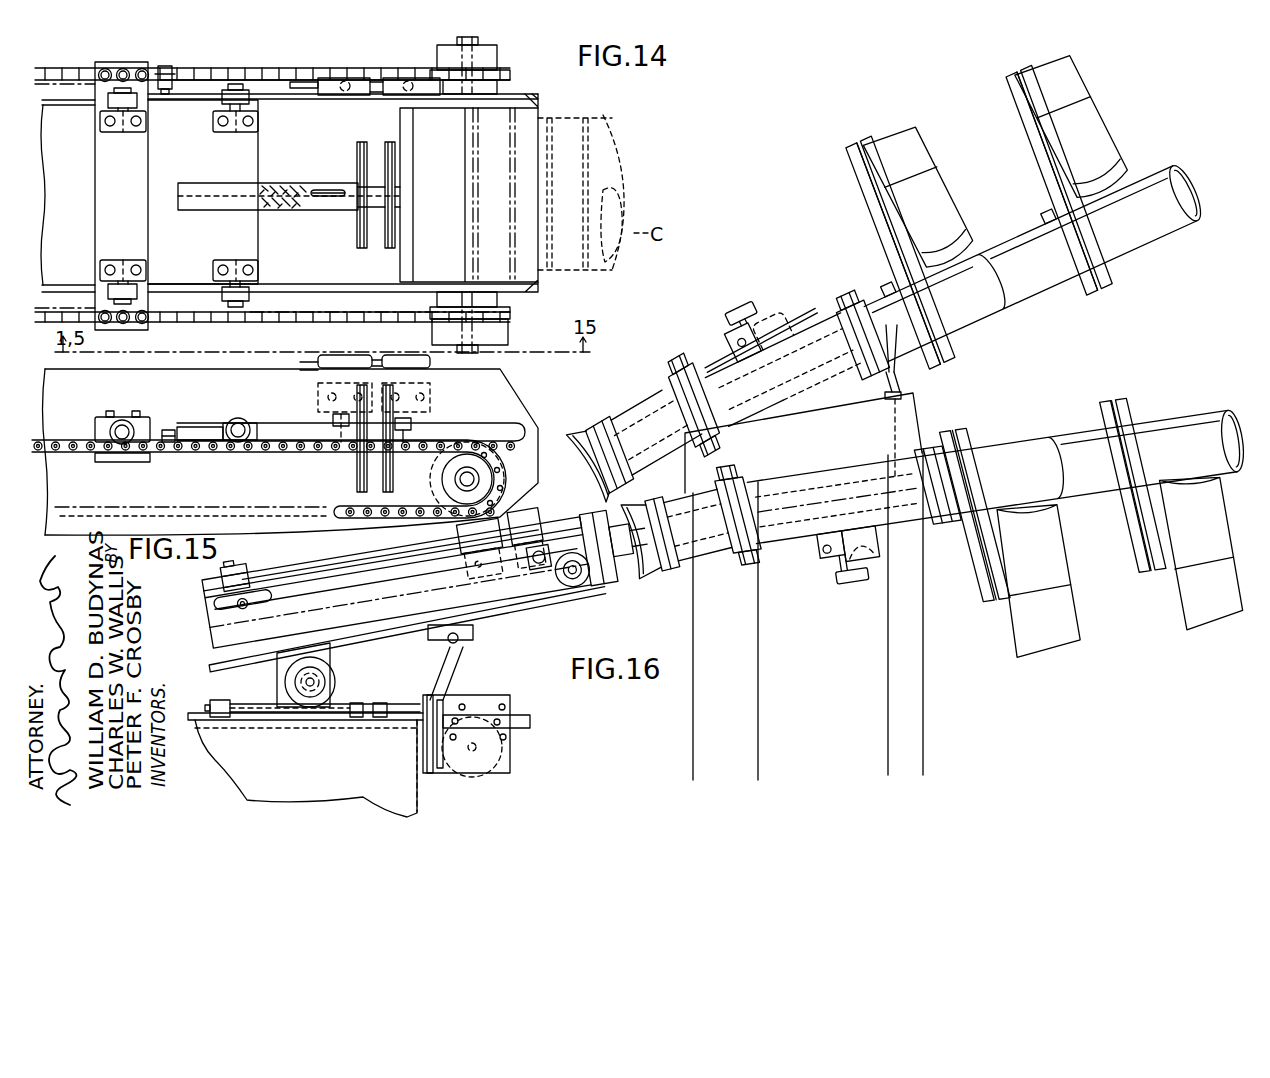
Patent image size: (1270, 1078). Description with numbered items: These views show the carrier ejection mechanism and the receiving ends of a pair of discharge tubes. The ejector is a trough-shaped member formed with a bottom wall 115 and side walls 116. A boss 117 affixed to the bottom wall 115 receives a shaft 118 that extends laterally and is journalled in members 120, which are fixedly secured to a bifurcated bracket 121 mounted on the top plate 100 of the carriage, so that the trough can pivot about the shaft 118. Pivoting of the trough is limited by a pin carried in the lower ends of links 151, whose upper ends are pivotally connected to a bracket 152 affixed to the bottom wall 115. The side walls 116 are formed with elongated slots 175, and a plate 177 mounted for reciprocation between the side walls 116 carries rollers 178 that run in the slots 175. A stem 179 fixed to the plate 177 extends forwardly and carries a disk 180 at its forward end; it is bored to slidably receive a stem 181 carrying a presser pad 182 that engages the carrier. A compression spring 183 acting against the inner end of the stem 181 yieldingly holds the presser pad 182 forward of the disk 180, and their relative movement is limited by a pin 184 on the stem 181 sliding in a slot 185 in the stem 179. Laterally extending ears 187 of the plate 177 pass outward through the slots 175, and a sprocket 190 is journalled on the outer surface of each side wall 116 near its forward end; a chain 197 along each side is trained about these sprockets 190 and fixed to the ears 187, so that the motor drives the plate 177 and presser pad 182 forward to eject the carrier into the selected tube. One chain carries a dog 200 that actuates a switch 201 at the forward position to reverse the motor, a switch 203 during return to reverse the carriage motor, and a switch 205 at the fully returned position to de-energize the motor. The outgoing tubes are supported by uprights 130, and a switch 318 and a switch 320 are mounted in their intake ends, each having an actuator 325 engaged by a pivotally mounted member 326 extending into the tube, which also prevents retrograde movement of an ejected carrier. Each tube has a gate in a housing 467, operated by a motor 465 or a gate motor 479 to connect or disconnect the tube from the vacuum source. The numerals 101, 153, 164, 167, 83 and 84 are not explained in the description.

In FIG. 14, the bottom wall 115 is at (68, 196).
In FIG. 16, the bottom wall 115 is at (520, 602).
In FIG. 14, the side walls 116 is at (335, 101).
In FIG. 15, the side walls 116 is at (300, 450).
In FIG. 16, the side walls 116 is at (397, 588).
In FIG. 16, the boss 117 is at (322, 656).
In FIG. 16, the shaft 118 is at (322, 683).
In FIG. 16, the members 120 is at (296, 683).
In FIG. 16, the bifurcated bracket 121 is at (340, 702).
In FIG. 16, the top plate 100 is at (335, 721).
In FIG. 16, the upright plate 101 is at (420, 784).
In FIG. 16, the uprights 130 is at (937, 736).
In FIG. 16, the links 151 is at (455, 665).
In FIG. 16, the bracket 152 is at (462, 637).
In FIG. 16, the bracket plate 153 is at (510, 754).
In FIG. 16, the arm 164 is at (530, 722).
In FIG. 16, the disc 167 is at (470, 776).
In FIG. 14, the elongated slots 175 is at (279, 101).
In FIG. 15, the elongated slots 175 is at (465, 422).
In FIG. 16, the elongated slots 175 is at (350, 565).
In FIG. 14, the plate 177 is at (176, 196).
In FIG. 15, the plate 177 is at (192, 434).
In FIG. 16, the plate 177 is at (575, 535).
In FIG. 14, the rollers 178 is at (222, 103).
In FIG. 15, the rollers 178 is at (122, 420).
In FIG. 16, the rollers 178 is at (545, 555).
In FIG. 14, the stem 179 is at (258, 183).
In FIG. 15, the stem 179 is at (339, 415).
In FIG. 16, the stem 179 is at (610, 560).
In FIG. 14, the disk 180 is at (368, 249).
In FIG. 15, the disk 180 is at (357, 475).
In FIG. 14, the stem 181 is at (378, 190).
In FIG. 14, the presser pad 182 is at (388, 142).
In FIG. 15, the presser pad 182 is at (393, 472).
In FIG. 14, the compression spring 183 is at (275, 211).
In FIG. 14, the pin 184 is at (331, 204).
In FIG. 14, the slot 185 is at (328, 190).
In FIG. 14, the ears 187 is at (131, 68).
In FIG. 14, the sprocket 190 is at (503, 60).
In FIG. 15, the sprocket 190 is at (486, 466).
In FIG. 16, the sprocket 190 is at (590, 590).
In FIG. 14, the chain 197 is at (63, 68).
In FIG. 15, the chain 197 is at (160, 446).
In FIG. 16, the chain 197 is at (205, 613).
In FIG. 14, the dog 200 is at (172, 73).
In FIG. 15, the dog 200 is at (169, 430).
In FIG. 14, the switch 201 is at (396, 80).
In FIG. 15, the switch 201 is at (415, 388).
In FIG. 16, the switch 201 is at (530, 523).
In FIG. 14, the switch 203 is at (334, 84).
In FIG. 15, the switch 203 is at (318, 392).
In FIG. 16, the switch 203 is at (475, 560).
In FIG. 16, the switch 205 is at (234, 573).
In FIG. 16, the switch 318 is at (830, 568).
In FIG. 16, the switch 320 is at (762, 322).
In FIG. 16, the actuator 325 is at (778, 345).
In FIG. 16, the pivotally mounted member 326 is at (733, 340).
In FIG. 16, the motor 465 is at (997, 161).
In FIG. 16, the housing 467 is at (876, 242).
In FIG. 16, the gate motor 479 is at (1119, 564).
In FIG. 16, the collar 83 is at (945, 522).
In FIG. 16, the clamp bolt 84 is at (905, 370).